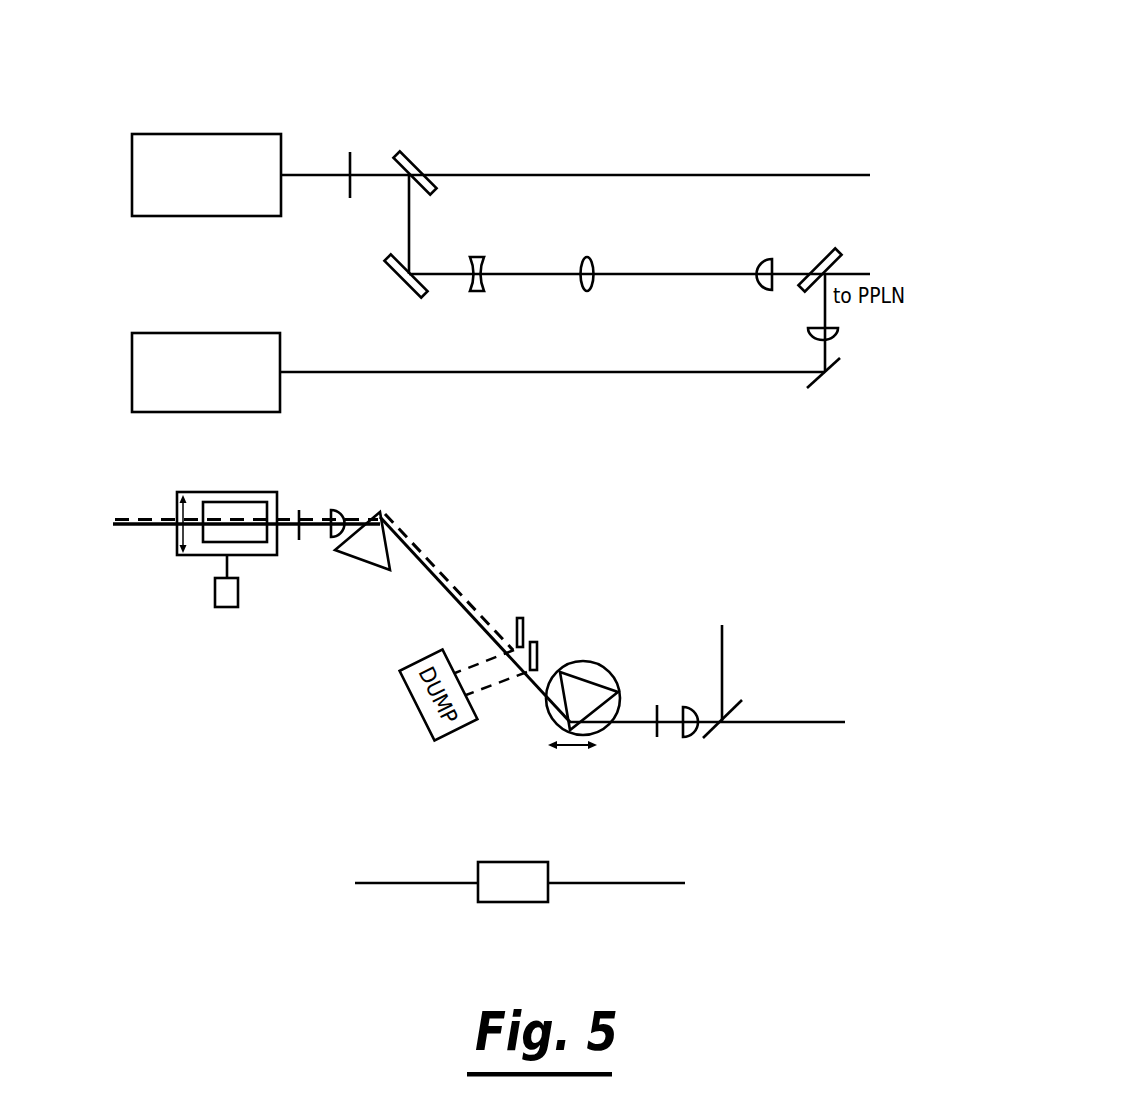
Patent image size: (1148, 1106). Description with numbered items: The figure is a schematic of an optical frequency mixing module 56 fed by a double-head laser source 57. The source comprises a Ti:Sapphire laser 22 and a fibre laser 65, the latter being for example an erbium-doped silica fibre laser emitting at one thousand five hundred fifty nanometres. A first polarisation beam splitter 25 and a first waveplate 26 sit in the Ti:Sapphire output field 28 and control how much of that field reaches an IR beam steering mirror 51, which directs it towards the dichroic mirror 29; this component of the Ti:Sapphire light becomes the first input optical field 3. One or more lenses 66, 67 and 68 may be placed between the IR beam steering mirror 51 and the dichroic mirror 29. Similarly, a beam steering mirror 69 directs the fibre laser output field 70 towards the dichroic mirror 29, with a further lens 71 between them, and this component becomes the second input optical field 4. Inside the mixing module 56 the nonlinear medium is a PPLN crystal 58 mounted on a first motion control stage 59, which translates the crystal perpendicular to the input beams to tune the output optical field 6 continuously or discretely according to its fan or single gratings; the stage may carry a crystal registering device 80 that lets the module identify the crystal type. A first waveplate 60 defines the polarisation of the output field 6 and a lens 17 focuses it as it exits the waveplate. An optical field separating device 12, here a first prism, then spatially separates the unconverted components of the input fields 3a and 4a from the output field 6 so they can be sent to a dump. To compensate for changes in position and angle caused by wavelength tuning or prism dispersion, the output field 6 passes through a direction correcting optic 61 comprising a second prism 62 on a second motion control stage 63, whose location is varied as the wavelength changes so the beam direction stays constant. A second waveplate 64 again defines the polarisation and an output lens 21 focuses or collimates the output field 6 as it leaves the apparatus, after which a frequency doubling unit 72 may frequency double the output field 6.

The Ti:Sapphire laser 22 is at (195, 134).
The first waveplate 26 is at (350, 157).
The first polarisation beam splitter 25 is at (432, 169).
The Ti:Sapphire output field 28 is at (308, 180).
The IR beam steering mirror 51 is at (400, 283).
The lens 66 is at (483, 265).
The lens 67 is at (597, 265).
The lens 68 is at (765, 262).
The first input optical field 3 is at (693, 277).
The dichroic mirror 29 is at (838, 251).
The further lens 71 is at (838, 333).
The second input optical field 4 is at (823, 347).
The beam steering mirror 69 is at (812, 385).
The fibre laser 65 is at (203, 332).
The fibre laser output field 70 is at (688, 375).
The double-head laser source 57 is at (770, 65).
The optical frequency mixing module 56 is at (688, 527).
The first motion control stage 59 is at (178, 498).
The PPLN crystal 58 is at (212, 544).
The crystal registering device 80 is at (234, 608).
The first waveplate 60 is at (305, 513).
The lens 17 is at (340, 514).
The optical field separating device 12 is at (382, 520).
The unconverted component of second input optical field 4a is at (478, 617).
The unconverted component of first input optical field 3a is at (448, 603).
The second prism 62 is at (608, 670).
The second motion control stage 63 is at (600, 727).
The direction correcting optic 61 is at (476, 775).
The second waveplate 64 is at (662, 710).
The output lens 21 is at (684, 737).
The output optical field 6 is at (792, 724).
The frequency doubling unit 72 is at (522, 902).